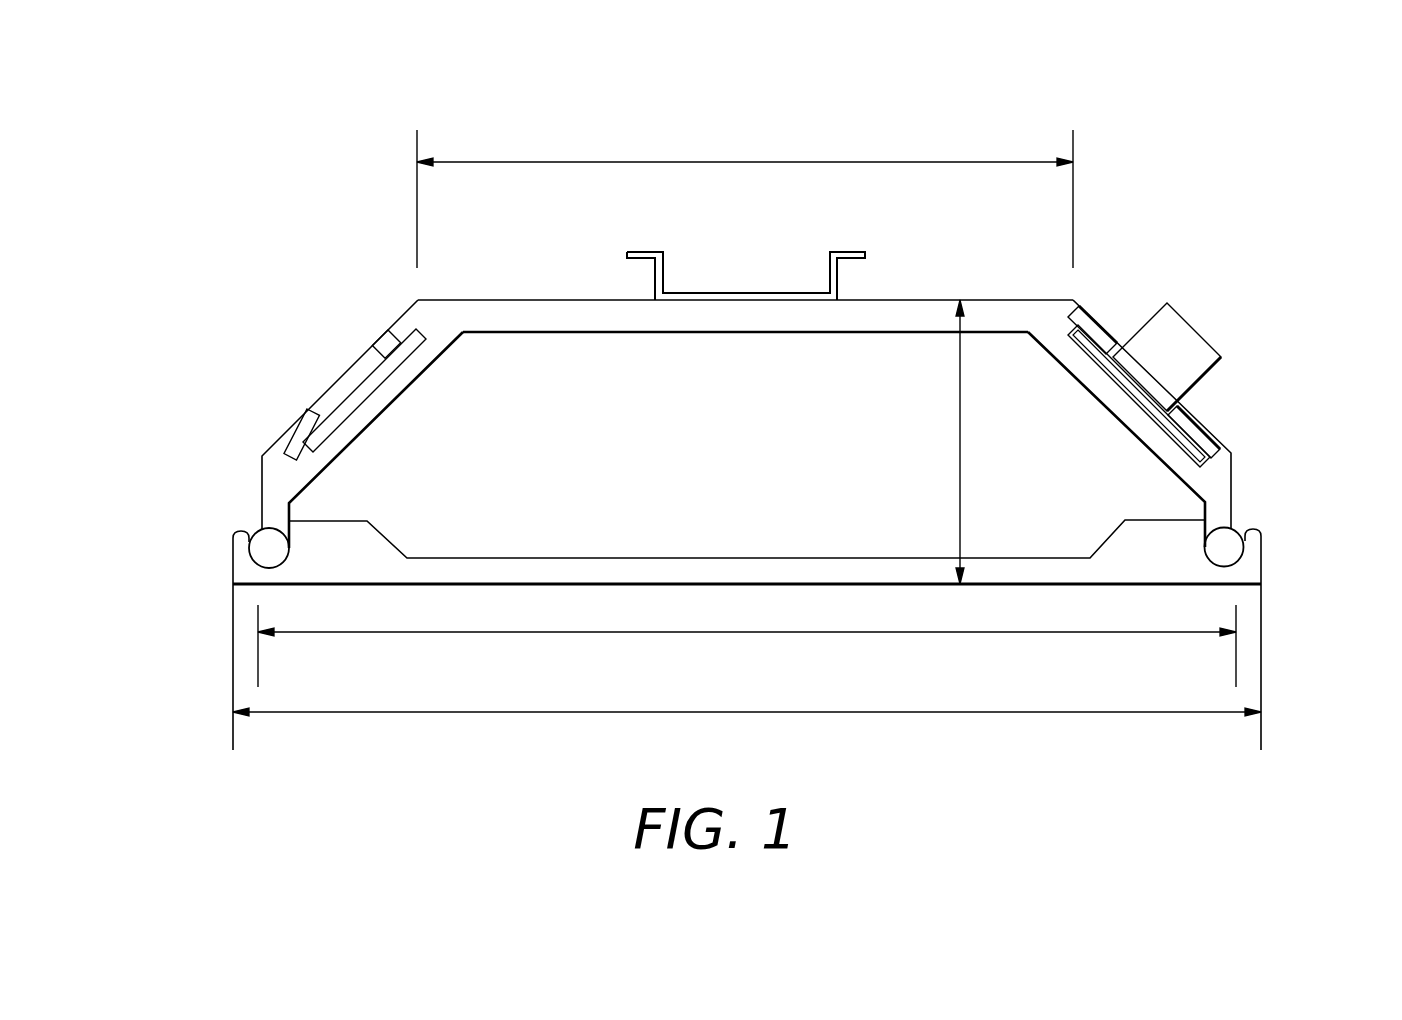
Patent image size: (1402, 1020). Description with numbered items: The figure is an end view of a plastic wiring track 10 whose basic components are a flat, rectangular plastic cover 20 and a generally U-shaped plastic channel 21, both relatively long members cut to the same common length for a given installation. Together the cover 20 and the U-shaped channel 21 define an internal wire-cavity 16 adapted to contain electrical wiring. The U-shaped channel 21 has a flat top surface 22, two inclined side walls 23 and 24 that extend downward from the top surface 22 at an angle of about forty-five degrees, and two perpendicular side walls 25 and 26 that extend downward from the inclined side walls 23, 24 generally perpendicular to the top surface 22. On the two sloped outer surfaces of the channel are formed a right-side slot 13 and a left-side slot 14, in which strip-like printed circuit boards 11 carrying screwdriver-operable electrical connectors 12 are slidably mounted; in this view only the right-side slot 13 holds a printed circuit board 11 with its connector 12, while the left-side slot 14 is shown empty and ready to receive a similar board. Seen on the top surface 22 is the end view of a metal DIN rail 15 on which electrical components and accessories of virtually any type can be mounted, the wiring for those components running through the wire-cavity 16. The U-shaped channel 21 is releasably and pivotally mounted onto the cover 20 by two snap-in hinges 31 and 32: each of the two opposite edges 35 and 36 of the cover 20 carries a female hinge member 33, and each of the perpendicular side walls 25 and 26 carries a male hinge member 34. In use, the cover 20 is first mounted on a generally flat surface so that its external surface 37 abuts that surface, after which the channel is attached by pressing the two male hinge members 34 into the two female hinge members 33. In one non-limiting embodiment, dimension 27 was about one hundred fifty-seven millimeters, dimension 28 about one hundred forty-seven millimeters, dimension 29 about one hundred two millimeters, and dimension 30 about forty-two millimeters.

The wiring track 10 is at (1143, 190).
The printed circuit board 11 is at (1193, 443).
The electrical connector 12 is at (1185, 340).
The right-side slot 13 is at (1100, 317).
The left-side slot 14 is at (388, 330).
The DIN rail 15 is at (648, 252).
The wire-cavity 16 is at (801, 457).
The cover 20 is at (471, 560).
The U-shaped channel 21 is at (512, 333).
The top surface 22 is at (897, 300).
The inclined side wall 23 is at (393, 401).
The inclined side wall 24 is at (1100, 401).
The perpendicular side wall 25 is at (262, 474).
The perpendicular side wall 26 is at (1232, 473).
The dimension 27 is at (405, 712).
The dimension 28 is at (427, 632).
The dimension 29 is at (770, 162).
The dimension 30 is at (960, 447).
The snap-in hinge 31 is at (217, 512).
The snap-in hinge 32 is at (1243, 505).
The female hinge member 33 is at (250, 557).
The male hinge member 34 is at (270, 540).
The edge 35 is at (232, 542).
The edge 36 is at (1262, 573).
The external surface 37 is at (1043, 588).